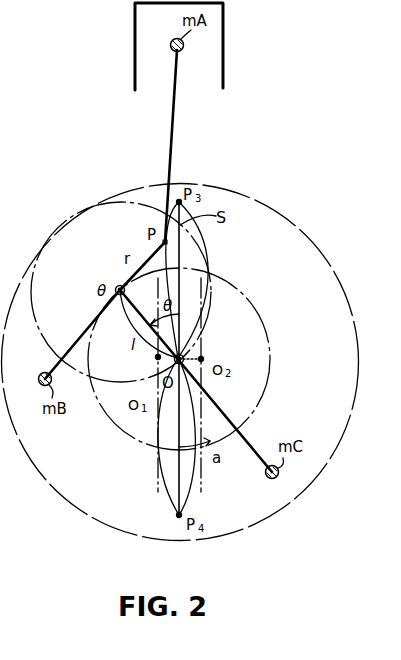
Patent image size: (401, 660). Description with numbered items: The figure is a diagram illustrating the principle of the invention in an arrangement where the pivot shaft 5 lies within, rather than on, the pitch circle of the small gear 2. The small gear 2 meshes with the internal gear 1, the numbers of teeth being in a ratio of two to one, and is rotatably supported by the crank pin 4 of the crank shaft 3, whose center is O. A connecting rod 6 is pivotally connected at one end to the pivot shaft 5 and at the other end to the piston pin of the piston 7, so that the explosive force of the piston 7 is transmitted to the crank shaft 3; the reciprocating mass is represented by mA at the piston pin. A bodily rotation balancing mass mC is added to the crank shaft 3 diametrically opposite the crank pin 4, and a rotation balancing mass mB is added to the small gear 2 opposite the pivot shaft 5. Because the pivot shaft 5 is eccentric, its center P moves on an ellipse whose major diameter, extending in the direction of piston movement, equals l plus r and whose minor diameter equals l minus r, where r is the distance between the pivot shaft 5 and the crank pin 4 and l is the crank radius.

The internal gear 1 is at (249, 196).
The small gear 2 is at (133, 201).
The crank shaft 3 is at (192, 336).
The crank pin 4 is at (119, 297).
The pivot shaft 5 is at (202, 358).
The connecting rod 6 is at (174, 117).
The piston 7 is at (223, 45).